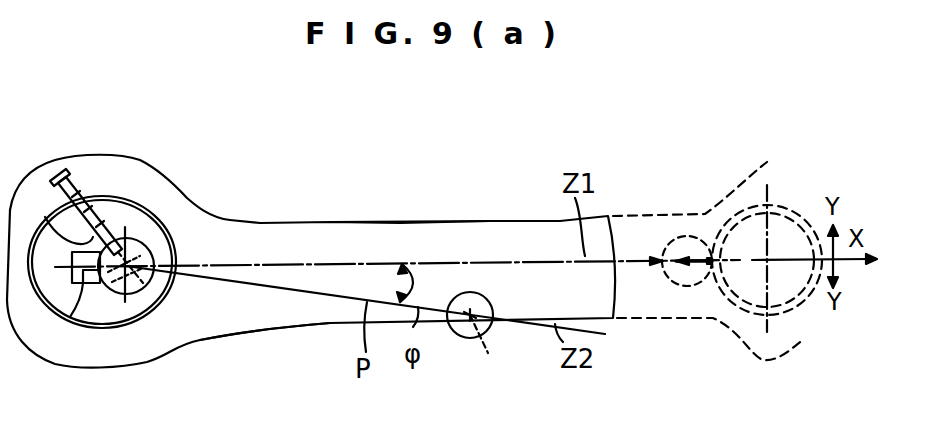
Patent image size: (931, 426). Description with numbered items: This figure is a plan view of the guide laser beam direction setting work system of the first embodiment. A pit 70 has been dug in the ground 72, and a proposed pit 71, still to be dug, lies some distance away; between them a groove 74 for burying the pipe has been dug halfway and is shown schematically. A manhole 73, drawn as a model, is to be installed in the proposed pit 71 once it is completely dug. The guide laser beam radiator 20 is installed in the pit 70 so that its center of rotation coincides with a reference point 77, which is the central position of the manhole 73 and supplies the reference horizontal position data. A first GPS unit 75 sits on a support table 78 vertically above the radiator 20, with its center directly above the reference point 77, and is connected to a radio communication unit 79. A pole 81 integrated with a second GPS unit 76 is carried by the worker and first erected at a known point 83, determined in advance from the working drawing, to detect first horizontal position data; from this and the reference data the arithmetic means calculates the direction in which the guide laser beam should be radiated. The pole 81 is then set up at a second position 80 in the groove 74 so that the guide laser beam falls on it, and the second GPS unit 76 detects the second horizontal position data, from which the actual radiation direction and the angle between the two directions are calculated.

The guide laser beam radiator 20 is at (63, 330).
The pit 70 is at (102, 352).
The proposed pit 71 is at (724, 261).
The ground 72 is at (339, 190).
The manhole 73 is at (172, 290).
The groove 74 is at (483, 232).
The first GPS unit 75 is at (145, 238).
The second GPS unit 76 is at (492, 300).
The reference point 77 is at (126, 270).
The support table 78 is at (110, 195).
The radio communication unit 79 is at (45, 220).
The second position 80 is at (470, 315).
The pole 81 is at (489, 349).
The known point 83 is at (690, 236).